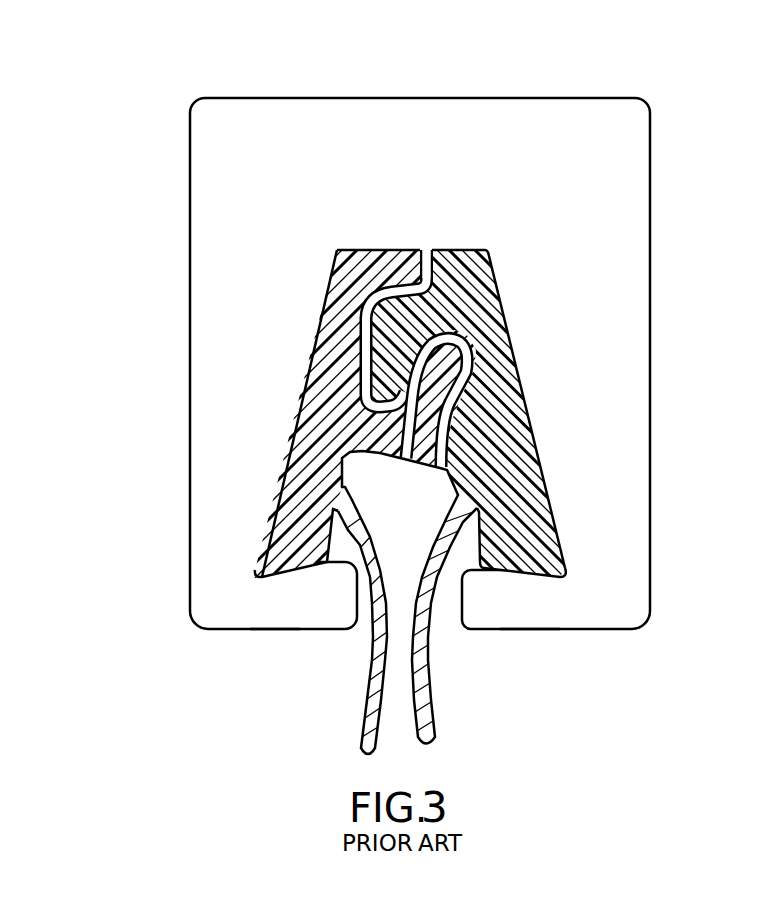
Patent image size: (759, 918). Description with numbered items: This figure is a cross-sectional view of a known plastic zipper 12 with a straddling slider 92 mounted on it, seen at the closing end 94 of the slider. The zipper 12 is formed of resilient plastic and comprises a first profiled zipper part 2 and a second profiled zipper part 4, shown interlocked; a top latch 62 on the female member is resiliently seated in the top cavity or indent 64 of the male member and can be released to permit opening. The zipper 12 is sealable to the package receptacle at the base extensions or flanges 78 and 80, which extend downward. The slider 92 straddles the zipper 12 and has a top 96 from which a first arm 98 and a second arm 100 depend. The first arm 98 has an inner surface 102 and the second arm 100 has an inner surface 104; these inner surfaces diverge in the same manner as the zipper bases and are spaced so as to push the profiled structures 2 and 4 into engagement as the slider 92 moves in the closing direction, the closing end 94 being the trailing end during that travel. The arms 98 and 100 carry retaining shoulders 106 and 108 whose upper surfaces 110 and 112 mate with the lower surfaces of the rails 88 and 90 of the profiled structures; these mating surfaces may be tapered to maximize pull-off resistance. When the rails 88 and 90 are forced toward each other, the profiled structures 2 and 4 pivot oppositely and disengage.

The first profiled zipper part 2 is at (530, 470).
The second profiled zipper part 4 is at (318, 362).
The plastic zipper 12 is at (509, 320).
The top latch 62 is at (421, 250).
The top cavity or indent 64 is at (438, 287).
The base extension or flange 78 is at (433, 717).
The base extension or flange 80 is at (363, 715).
The rail 88 is at (552, 556).
The rail 90 is at (272, 555).
The straddling slider 92 is at (593, 93).
The closing end 94 is at (628, 141).
The top 96 is at (362, 100).
The first arm 98 is at (624, 321).
The second arm 100 is at (205, 323).
The inner surface 102 is at (530, 417).
The inner surface 104 is at (298, 443).
The retaining shoulder 106 is at (472, 605).
The retaining shoulder 108 is at (327, 615).
The upper surface 110 is at (547, 573).
The upper surface 112 is at (284, 577).